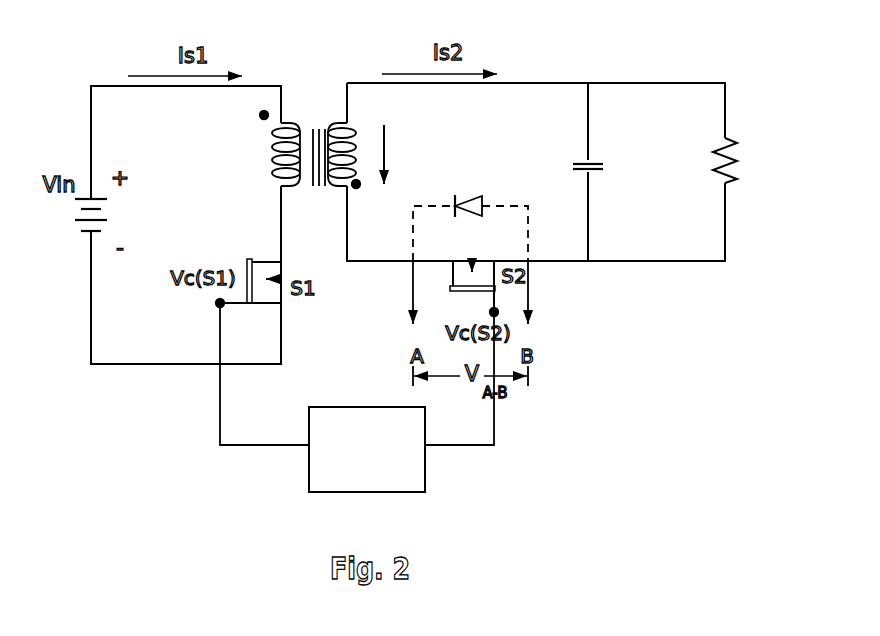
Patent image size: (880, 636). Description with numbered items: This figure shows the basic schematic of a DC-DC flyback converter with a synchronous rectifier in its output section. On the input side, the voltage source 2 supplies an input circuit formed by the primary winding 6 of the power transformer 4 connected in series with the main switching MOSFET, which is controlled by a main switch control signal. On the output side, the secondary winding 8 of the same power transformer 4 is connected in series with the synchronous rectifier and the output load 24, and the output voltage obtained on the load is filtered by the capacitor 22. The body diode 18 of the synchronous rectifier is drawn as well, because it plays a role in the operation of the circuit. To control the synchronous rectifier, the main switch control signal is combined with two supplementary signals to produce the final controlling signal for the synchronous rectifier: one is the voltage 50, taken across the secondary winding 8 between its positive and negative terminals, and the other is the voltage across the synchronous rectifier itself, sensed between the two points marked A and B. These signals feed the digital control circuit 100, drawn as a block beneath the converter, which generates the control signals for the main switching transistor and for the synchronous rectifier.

The input voltage source 2 is at (70, 230).
The transformer 4 is at (315, 115).
The primary winding 6 is at (267, 162).
The secondary winding 8 is at (357, 123).
The body diode 18 is at (482, 193).
The output capacitor 22 is at (598, 160).
The load resistor 24 is at (743, 136).
The synchronous rectifier secondary circuit 50 is at (397, 163).
The digital control circuit 100 is at (307, 463).